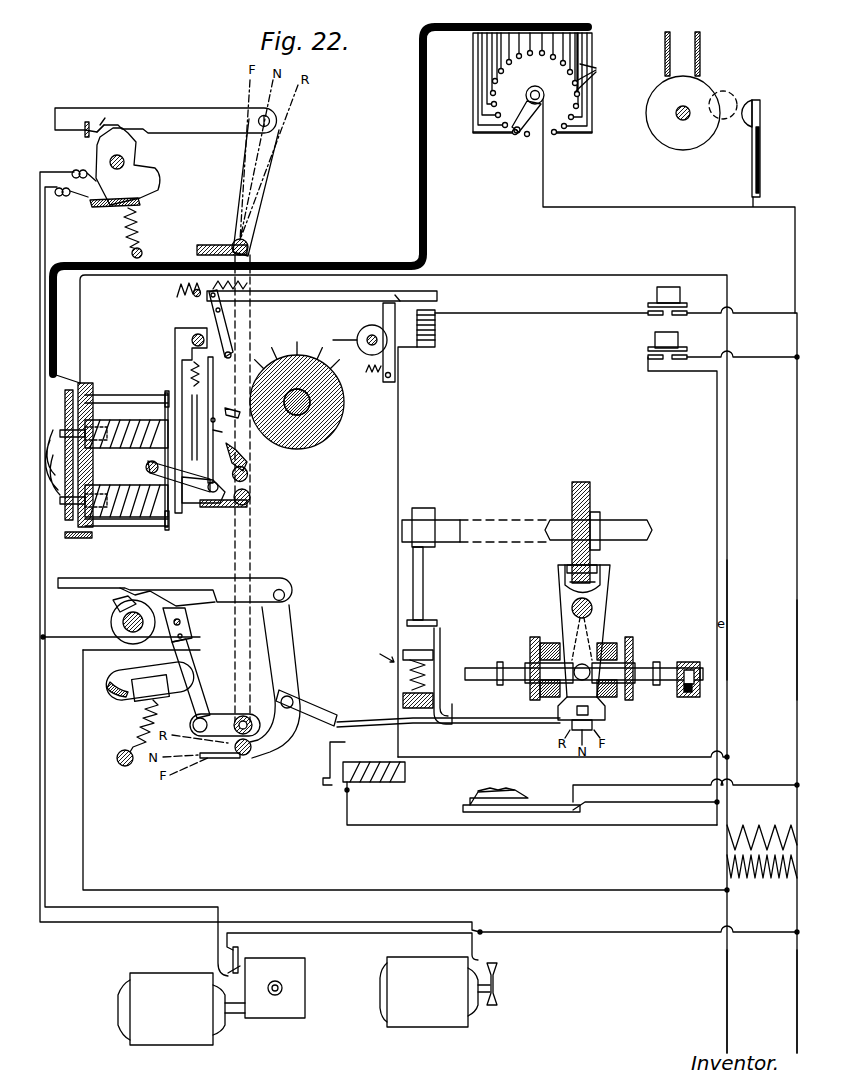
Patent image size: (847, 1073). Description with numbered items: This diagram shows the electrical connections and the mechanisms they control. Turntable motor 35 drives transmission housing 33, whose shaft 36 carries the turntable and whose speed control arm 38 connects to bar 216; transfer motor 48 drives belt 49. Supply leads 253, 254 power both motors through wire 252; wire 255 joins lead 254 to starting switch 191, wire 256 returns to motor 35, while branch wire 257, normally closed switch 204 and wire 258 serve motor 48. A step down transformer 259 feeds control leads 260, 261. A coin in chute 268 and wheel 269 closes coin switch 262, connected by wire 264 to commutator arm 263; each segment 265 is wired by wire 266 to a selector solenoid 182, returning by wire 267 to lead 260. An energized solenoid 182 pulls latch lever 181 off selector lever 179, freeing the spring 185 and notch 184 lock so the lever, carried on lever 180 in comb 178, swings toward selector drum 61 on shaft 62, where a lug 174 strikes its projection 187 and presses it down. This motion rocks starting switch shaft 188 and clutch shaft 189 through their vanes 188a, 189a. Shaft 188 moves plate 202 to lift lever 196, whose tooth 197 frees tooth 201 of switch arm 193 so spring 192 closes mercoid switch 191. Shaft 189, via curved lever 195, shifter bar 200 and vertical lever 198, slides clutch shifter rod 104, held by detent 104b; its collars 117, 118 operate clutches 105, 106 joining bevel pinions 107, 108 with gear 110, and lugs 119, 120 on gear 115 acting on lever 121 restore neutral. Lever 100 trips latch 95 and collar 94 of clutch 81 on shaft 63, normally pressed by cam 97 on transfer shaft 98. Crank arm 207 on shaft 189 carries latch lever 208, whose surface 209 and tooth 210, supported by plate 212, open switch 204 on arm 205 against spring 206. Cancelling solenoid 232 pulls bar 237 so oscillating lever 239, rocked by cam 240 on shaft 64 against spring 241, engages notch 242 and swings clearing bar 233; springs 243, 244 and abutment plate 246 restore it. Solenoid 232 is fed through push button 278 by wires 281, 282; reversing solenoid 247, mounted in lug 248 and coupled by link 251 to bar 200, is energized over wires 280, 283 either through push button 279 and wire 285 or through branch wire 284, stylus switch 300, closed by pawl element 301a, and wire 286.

The housing 33 is at (287, 1019).
The turntable motor 35 is at (180, 1046).
The vertical shaft 36 is at (283, 989).
The speed control arm 38 is at (240, 958).
The transfer driving motor 48 is at (423, 1032).
The belt 49 is at (498, 970).
The selector drum 61 is at (322, 442).
The shaft 62 is at (310, 412).
The shaft 63 is at (424, 598).
The shaft 64 is at (339, 342).
The clutch 81 is at (379, 649).
The flange collar 94 is at (438, 624).
The latch lever 95 is at (436, 672).
The cam 97 is at (430, 548).
The transfer drive shaft 98 is at (632, 522).
The lever 100 is at (444, 726).
The clutch shifter rod 104 is at (692, 662).
The detent plunger 104b is at (695, 697).
The clutch mechanism 105 is at (658, 684).
The clutch mechanism 106 is at (494, 690).
The bevel pinion 107 is at (634, 642).
The bevel pinion 108 is at (530, 648).
The bevel gear 110 is at (610, 642).
The driven gear 115 is at (591, 498).
The flange collar portion 117 is at (686, 662).
The flange collar portion 118 is at (497, 664).
The lug 119 is at (598, 570).
The lug 120 is at (566, 582).
The lever 121 is at (600, 605).
The selector lugs 174 is at (279, 348).
The selector lever spacing comb 178 is at (237, 403).
The selector lever 179 is at (218, 432).
The lever 180 is at (165, 512).
The latch lever 181 is at (176, 355).
The solenoid 182 is at (148, 466).
The notch 184 is at (186, 505).
The spring 185 is at (190, 380).
The angular projection 187 is at (215, 392).
The starting switch operating shaft 188 is at (249, 478).
The lateral vane 188a is at (250, 458).
The clutch operating shaft 189 is at (249, 246).
The lateral vane 189a is at (224, 508).
The mercoid motor starting switch 191 is at (116, 698).
The spring 192 is at (209, 723).
The switch arm 193 is at (111, 623).
The curved lever 195 is at (296, 650).
The lever 196 is at (200, 580).
The tooth 197 is at (136, 590).
The clutch shifter lever 198 is at (600, 700).
The shifter bar 200 is at (352, 712).
The tooth 201 is at (112, 602).
The plate 202 is at (195, 700).
The auxiliary switch 204 is at (100, 208).
The arm 205 is at (136, 148).
The spring 206 is at (142, 236).
The crank arm 207 is at (274, 176).
The latch lever 208 is at (182, 108).
The angular surface 209 is at (68, 110).
The tooth 210 is at (104, 122).
The plate 212 is at (84, 138).
The bar 216 is at (232, 950).
The solenoid 232 is at (437, 334).
The clearing bar 233 is at (232, 352).
The bar 237 is at (437, 296).
The oscillating lever 239 is at (388, 303).
The eccentric cam 240 is at (368, 312).
The spring 241 is at (374, 375).
The notch 242 is at (322, 288).
The spring 243 is at (234, 302).
The spring 244 is at (175, 297).
The abutment plate 246 is at (196, 298).
The solenoid 247 is at (366, 790).
The lug 248 is at (324, 778).
The link 251 is at (340, 722).
The wire 252 is at (566, 934).
The supply lead 253 is at (797, 966).
The supply lead 254 is at (727, 982).
The wire 255 is at (472, 890).
The wire 256 is at (75, 648).
The branch wire 257 is at (45, 230).
The wire 258 is at (66, 160).
The step down transformer 259 is at (718, 860).
The control circuit lead wire 260 is at (731, 580).
The control circuit lead wire 261 is at (796, 624).
The coin operated switch 262 is at (760, 148).
The commutator 263 is at (553, 123).
The wire 264 is at (589, 207).
The segments 265 is at (602, 75).
The wire 266 is at (583, 40).
The wire 267 is at (540, 276).
The coin chute 268 is at (701, 56).
The wheel 269 is at (696, 148).
The push button 278 is at (655, 295).
The push button 279 is at (654, 338).
The wire 280 is at (630, 762).
The wire 281 is at (520, 313).
The wire 282 is at (755, 313).
The wire 283 is at (598, 826).
The branch wire 284 is at (636, 808).
The wire 285 is at (757, 360).
The wire 286 is at (643, 792).
The switch 300 is at (530, 814).
The contact 301a is at (485, 800).